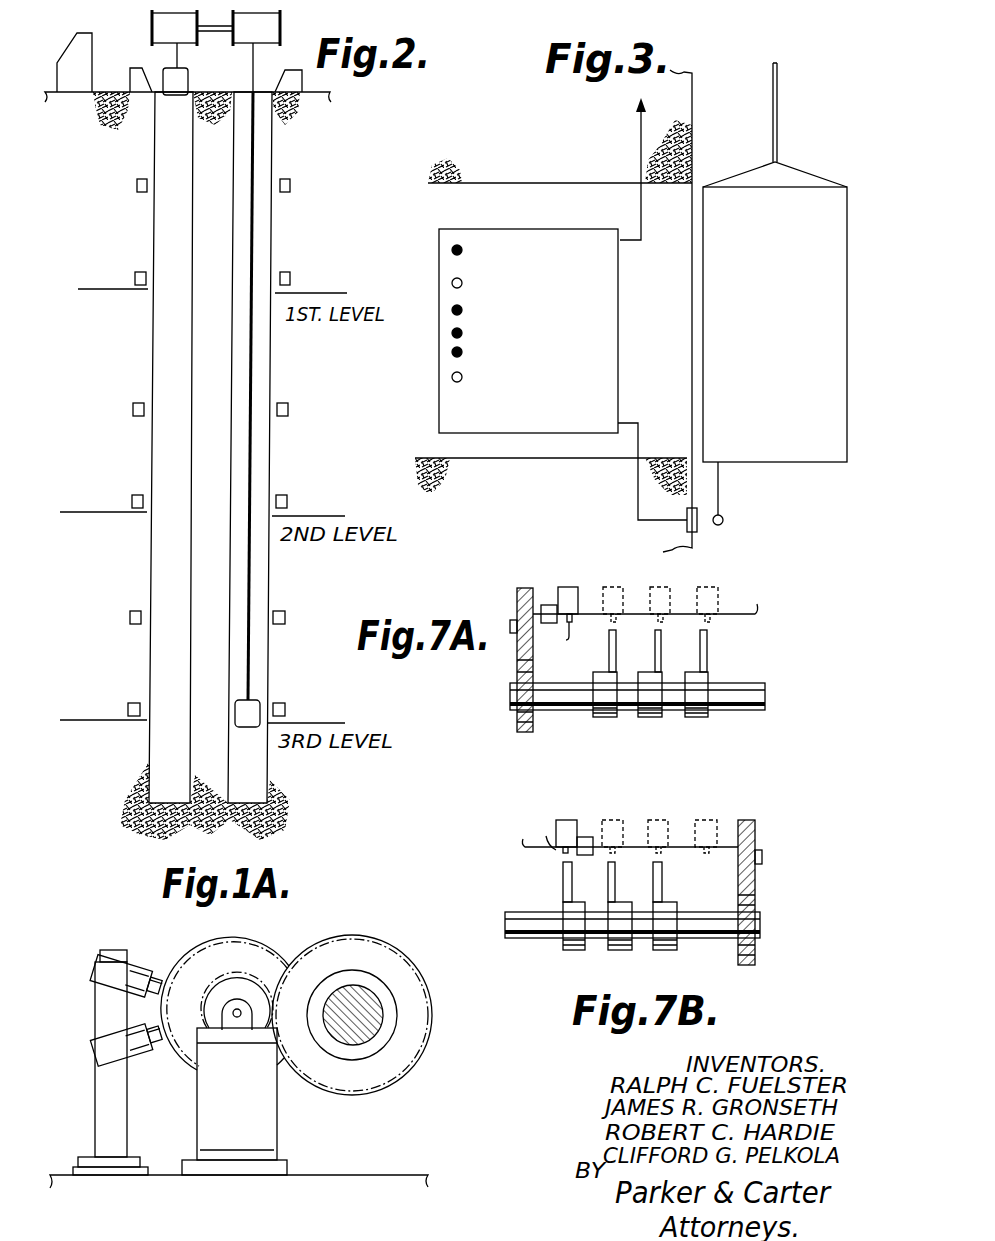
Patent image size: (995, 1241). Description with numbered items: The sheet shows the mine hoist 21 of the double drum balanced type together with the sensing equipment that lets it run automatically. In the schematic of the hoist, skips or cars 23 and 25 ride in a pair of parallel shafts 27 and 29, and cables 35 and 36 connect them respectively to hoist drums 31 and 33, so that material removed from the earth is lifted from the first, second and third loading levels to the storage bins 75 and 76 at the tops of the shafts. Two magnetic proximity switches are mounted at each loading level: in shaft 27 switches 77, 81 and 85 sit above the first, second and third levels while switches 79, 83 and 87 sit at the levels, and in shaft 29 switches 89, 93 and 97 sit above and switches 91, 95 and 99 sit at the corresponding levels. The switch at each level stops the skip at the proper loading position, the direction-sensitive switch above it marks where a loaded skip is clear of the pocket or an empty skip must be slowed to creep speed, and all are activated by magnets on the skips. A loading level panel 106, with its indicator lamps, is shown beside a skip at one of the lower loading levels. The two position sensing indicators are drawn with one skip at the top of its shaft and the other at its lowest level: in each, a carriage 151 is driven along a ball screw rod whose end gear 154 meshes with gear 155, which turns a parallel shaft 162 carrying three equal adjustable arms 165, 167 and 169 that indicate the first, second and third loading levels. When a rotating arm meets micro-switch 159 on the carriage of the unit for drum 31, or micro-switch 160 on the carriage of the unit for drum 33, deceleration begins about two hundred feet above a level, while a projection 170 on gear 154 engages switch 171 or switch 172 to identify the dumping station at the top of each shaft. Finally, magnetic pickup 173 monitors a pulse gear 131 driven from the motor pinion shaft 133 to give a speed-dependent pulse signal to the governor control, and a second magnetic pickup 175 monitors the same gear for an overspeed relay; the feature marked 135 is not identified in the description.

In FIG. 2, the mine hoist 21 is at (297, 21).
In FIG. 2, the skip 23 is at (188, 80).
In FIG. 2, the skip 25 is at (250, 704).
In FIG. 2, the shaft 27 is at (160, 745).
In FIG. 2, the shaft 29 is at (271, 592).
In FIG. 2, the hoist drum 31 is at (152, 27).
In FIG. 2, the hoist drum 33 is at (266, 44).
In FIG. 2, the cable 35 is at (182, 61).
In FIG. 2, the cable 36 is at (252, 240).
In FIG. 2, the storage bin 75 is at (137, 72).
In FIG. 2, the storage bin 76 is at (300, 87).
In FIG. 2, the proximity switch 77 is at (137, 185).
In FIG. 2, the proximity switch 79 is at (135, 278).
In FIG. 2, the proximity switch 81 is at (133, 410).
In FIG. 2, the proximity switch 83 is at (132, 498).
In FIG. 2, the proximity switch 85 is at (130, 617).
In FIG. 2, the proximity switch 87 is at (128, 709).
In FIG. 2, the proximity switch 89 is at (290, 187).
In FIG. 2, the proximity switch 91 is at (290, 278).
In FIG. 2, the proximity switch 93 is at (288, 410).
In FIG. 2, the proximity switch 95 is at (287, 501).
In FIG. 2, the proximity switch 97 is at (285, 617).
In FIG. 2, the proximity switch 99 is at (285, 709).
In FIG. 3, the loading level panel 106 is at (620, 324).
In FIG. 1A, the pulse gear 131 is at (235, 940).
In FIG. 1A, the motor pinion shaft 133 is at (365, 1015).
In FIG. 1A, the take-up reel 135 is at (297, 978).
In FIG. 7A, the carriage 151 is at (578, 593).
In FIG. 7B, the carriage 151 is at (565, 820).
In FIG. 7A, the gear 154 is at (517, 646).
In FIG. 7B, the gear 154 is at (757, 842).
In FIG. 7A, the gear 155 is at (517, 716).
In FIG. 7B, the gear 155 is at (755, 950).
In FIG. 7A, the micro-switch 159 is at (593, 639).
In FIG. 7B, the micro-switch 160 is at (563, 850).
In FIG. 7A, the shaft 162 is at (765, 697).
In FIG. 7B, the shaft 162 is at (548, 940).
In FIG. 7A, the adjustable arm 165 is at (609, 655).
In FIG. 7B, the adjustable arm 165 is at (663, 883).
In FIG. 7A, the adjustable arm 167 is at (656, 648).
In FIG. 7B, the adjustable arm 167 is at (612, 893).
In FIG. 7A, the adjustable arm 169 is at (708, 652).
In FIG. 7B, the adjustable arm 169 is at (565, 880).
In FIG. 7A, the projection 170 is at (543, 607).
In FIG. 7B, the projection 170 is at (738, 835).
In FIG. 7A, the switch 171 is at (548, 605).
In FIG. 7B, the switch 172 is at (586, 837).
In FIG. 1A, the magnetic pickup 173 is at (159, 985).
In FIG. 1A, the magnetic pickup 175 is at (157, 1064).